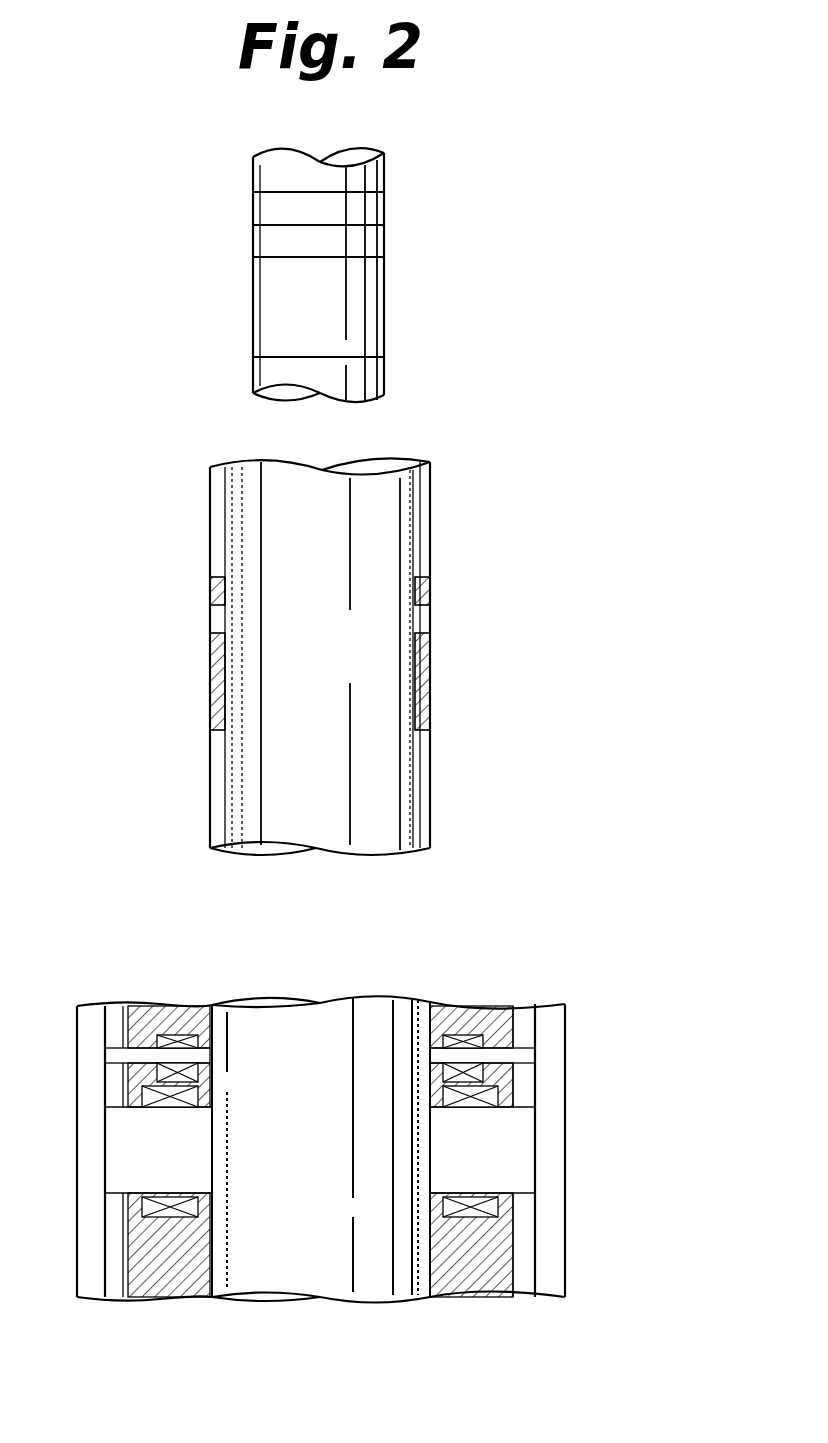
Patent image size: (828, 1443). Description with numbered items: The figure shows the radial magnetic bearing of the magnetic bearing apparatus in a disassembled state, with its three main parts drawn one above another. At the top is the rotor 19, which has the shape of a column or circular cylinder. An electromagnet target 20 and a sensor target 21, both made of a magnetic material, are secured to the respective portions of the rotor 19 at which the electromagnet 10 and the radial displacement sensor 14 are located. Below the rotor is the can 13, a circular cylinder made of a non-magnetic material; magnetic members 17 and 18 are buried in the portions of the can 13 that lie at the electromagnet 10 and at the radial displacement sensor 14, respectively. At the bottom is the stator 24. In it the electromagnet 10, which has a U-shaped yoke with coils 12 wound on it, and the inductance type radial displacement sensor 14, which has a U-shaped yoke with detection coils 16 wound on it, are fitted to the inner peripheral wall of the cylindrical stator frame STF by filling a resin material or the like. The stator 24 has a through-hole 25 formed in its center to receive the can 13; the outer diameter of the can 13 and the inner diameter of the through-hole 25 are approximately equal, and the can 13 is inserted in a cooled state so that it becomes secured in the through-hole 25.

The electromagnet 10 is at (500, 1138).
The coils 12 is at (510, 1190).
The can 13 is at (448, 615).
The radial displacement sensor 14 is at (523, 1055).
The detection coils 16 is at (466, 1040).
The magnetic member 17 is at (434, 684).
The magnetic member 18 is at (432, 580).
The rotor 19 is at (410, 262).
The electromagnet target 20 is at (358, 319).
The sensor target 21 is at (363, 212).
The stator 24 is at (568, 1147).
The through-hole 25 is at (212, 1083).
The stator frame STF is at (565, 1240).